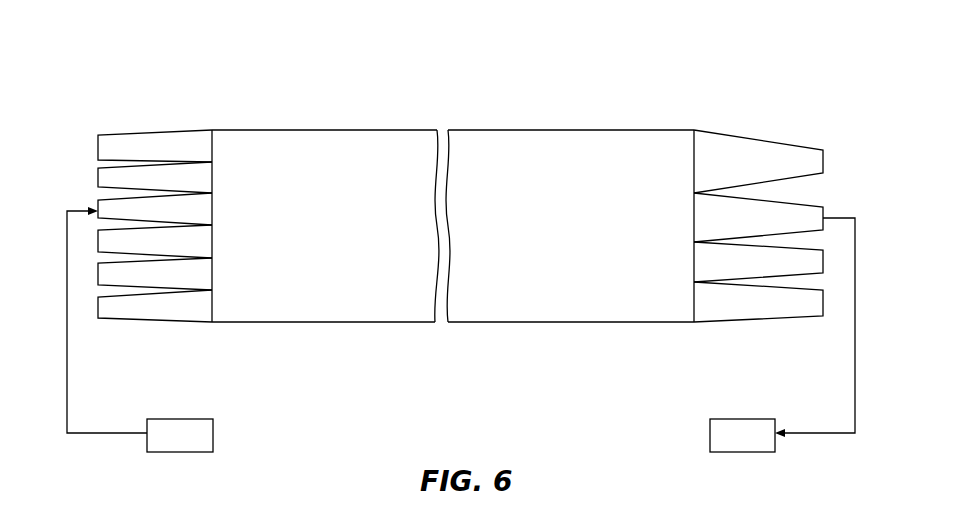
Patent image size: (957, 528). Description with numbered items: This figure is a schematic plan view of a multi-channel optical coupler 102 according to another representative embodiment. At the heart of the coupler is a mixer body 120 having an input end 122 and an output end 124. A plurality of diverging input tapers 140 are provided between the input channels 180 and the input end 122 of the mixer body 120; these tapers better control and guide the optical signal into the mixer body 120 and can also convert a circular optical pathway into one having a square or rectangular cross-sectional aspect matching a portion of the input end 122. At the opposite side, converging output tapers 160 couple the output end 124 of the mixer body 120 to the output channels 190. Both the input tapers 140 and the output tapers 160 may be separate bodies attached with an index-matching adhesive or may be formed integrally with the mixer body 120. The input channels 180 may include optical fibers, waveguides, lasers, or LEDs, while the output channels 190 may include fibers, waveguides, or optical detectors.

The multi-channel optical coupler 102 is at (234, 100).
The mixer body 120 is at (408, 322).
The input end 122 is at (212, 272).
The output end 124 is at (694, 270).
The diverging input tapers 140 is at (175, 130).
The converging output tapers 160 is at (762, 140).
The input channels 180 is at (140, 329).
The output channels 190 is at (782, 335).